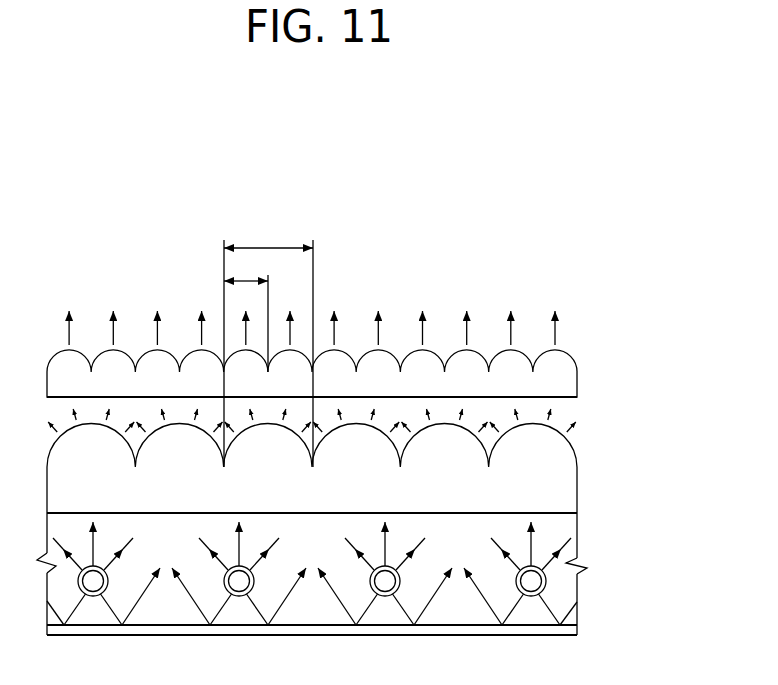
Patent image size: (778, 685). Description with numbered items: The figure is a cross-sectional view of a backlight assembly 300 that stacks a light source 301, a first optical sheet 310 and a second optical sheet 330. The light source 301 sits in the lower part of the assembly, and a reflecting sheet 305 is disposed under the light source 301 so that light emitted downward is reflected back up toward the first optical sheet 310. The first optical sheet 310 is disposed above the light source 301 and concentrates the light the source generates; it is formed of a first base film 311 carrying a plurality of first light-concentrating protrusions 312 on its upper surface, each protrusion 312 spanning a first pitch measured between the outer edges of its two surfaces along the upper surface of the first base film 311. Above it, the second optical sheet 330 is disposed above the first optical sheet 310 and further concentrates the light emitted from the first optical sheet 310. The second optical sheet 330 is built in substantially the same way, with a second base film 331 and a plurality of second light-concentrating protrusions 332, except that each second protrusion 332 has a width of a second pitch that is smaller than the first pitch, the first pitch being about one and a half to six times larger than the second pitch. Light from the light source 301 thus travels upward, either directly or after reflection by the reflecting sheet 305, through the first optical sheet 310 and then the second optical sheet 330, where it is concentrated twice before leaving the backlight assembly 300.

The backlight assembly 300 is at (297, 198).
The second optical sheet 330 is at (378, 383).
The second light-concentrating protrusions 332 is at (557, 365).
The second base film 331 is at (568, 387).
The first optical sheet 310 is at (378, 490).
The first light-concentrating protrusions 312 is at (557, 452).
The first base film 311 is at (557, 492).
The light source 301 is at (547, 582).
The reflecting sheet 305 is at (563, 630).